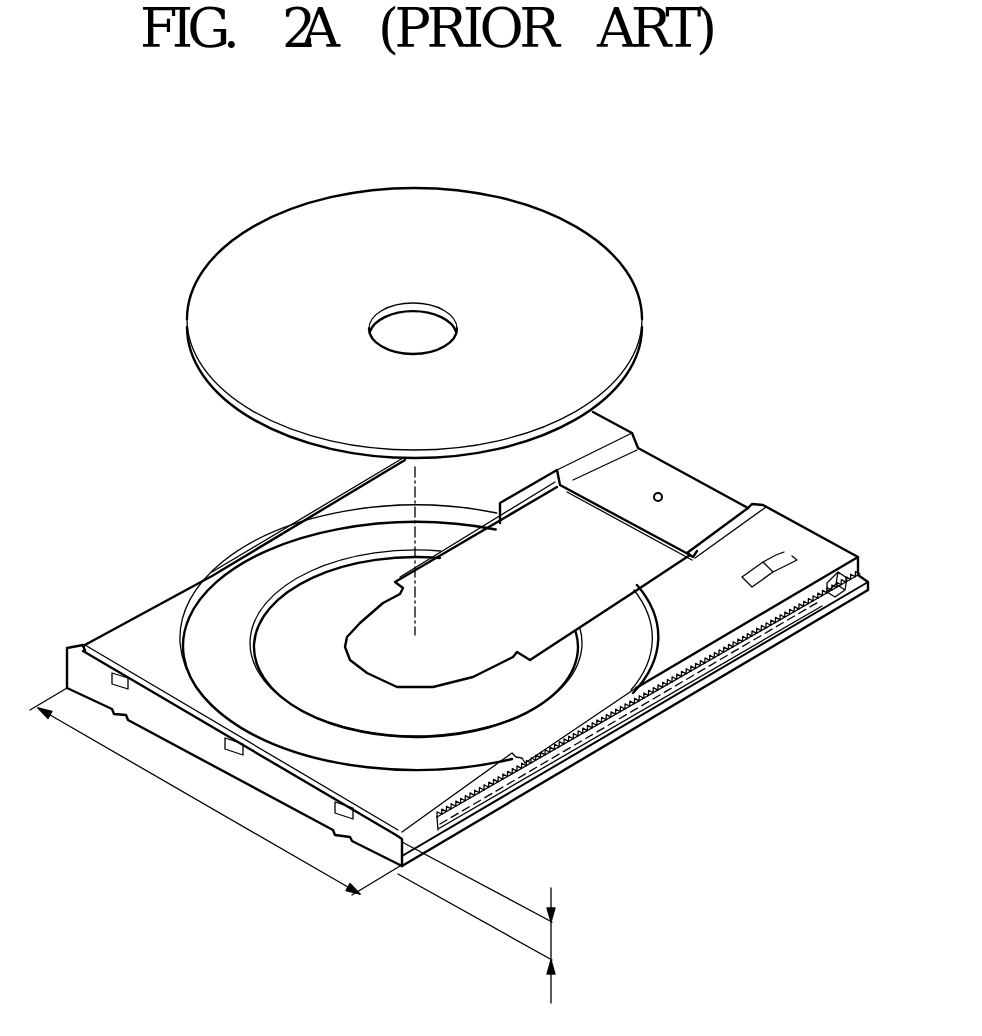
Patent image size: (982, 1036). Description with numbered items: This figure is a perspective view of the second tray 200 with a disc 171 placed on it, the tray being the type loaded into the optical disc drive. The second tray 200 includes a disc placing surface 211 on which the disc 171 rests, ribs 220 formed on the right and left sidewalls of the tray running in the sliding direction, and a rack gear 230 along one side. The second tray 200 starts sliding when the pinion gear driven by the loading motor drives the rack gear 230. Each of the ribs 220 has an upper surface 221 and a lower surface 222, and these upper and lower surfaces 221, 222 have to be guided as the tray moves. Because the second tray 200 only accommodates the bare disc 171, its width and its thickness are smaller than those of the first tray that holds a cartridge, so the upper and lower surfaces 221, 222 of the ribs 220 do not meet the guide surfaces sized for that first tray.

The disc 171 is at (205, 303).
The second tray 200 is at (449, 707).
The disc placing surface 211 is at (231, 606).
The ribs 220 is at (522, 798).
The upper surfaces 221 is at (440, 833).
The lower surfaces 222 is at (590, 757).
The rack gear 230 is at (723, 662).